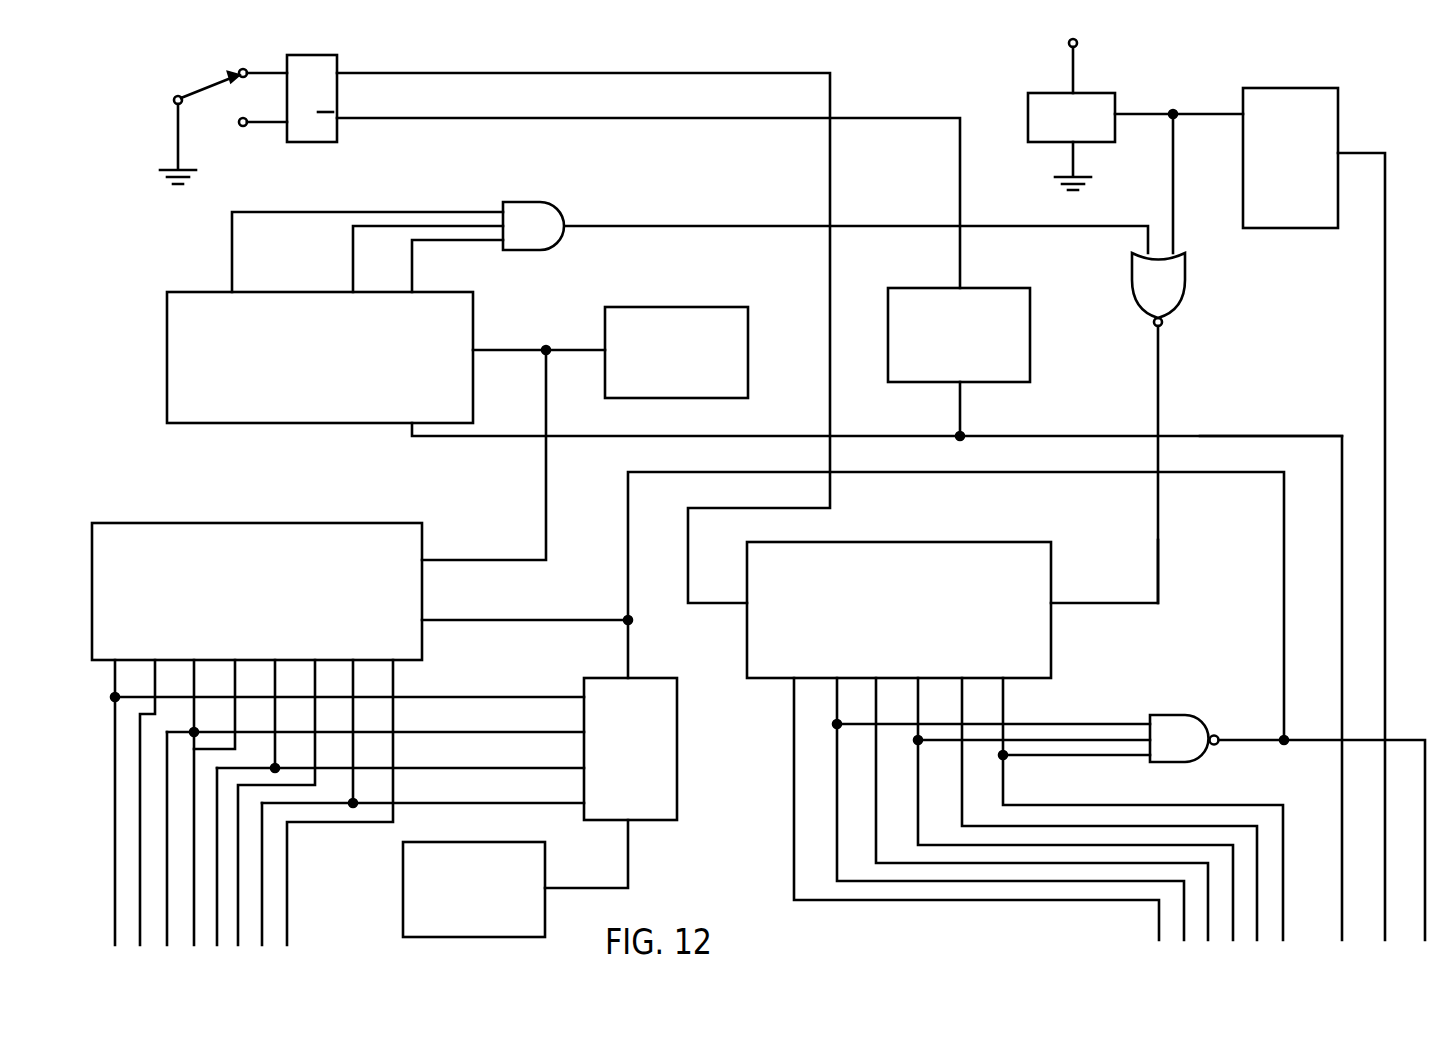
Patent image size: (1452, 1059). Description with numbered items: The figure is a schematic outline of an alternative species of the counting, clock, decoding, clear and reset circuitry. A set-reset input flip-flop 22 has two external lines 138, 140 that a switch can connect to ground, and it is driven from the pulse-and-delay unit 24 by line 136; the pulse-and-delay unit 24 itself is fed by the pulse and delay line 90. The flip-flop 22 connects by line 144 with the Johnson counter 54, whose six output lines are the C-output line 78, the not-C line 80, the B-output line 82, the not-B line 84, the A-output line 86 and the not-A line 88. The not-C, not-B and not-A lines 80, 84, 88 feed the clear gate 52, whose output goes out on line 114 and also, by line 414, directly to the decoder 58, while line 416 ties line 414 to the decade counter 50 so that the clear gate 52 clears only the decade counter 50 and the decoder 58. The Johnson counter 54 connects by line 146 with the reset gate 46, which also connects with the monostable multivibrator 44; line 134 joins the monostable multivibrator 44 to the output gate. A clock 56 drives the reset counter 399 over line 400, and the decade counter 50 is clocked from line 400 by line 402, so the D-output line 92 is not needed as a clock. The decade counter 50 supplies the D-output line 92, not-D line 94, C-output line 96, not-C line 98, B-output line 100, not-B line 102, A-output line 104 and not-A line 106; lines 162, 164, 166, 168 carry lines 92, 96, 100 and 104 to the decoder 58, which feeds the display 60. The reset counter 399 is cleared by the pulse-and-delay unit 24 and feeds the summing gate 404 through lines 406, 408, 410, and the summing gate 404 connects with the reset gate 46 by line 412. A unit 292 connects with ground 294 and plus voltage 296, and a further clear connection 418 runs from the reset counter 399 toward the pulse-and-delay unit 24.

The set-reset input flip-flop 22 is at (310, 142).
The pulse-and-delay unit 24 is at (959, 364).
The monostable multivibrator 44 is at (1226, 158).
The reset gate 46 is at (1118, 360).
The decade counter 50 is at (257, 591).
The clear gate 52 is at (1184, 738).
The Johnson counter 54 is at (899, 610).
The clock 56 is at (676, 352).
The decoder 58 is at (611, 783).
The display 60 is at (474, 889).
The C-output line of Johnson counter 78 is at (794, 724).
The not-C line of Johnson counter 80 is at (837, 768).
The B-output line of Johnson counter 82 is at (876, 803).
The not-B line of Johnson counter 84 is at (918, 840).
The A-output line of Johnson counter 86 is at (1026, 826).
The not-A line of Johnson counter 88 is at (1130, 797).
The pulse and delay line 90 is at (1235, 436).
The D-output line of decade counter 92 is at (115, 745).
The not-D line of decade counter 94 is at (140, 783).
The C-output line of decade counter 96 is at (167, 818).
The not-C line of decade counter 98 is at (194, 855).
The B-output line of decade counter 100 is at (217, 896).
The not-B line of decade counter 102 is at (238, 850).
The A-output line of decade counter 104 is at (262, 888).
The not-A line of decade counter 106 is at (287, 918).
The clear gate output line 114 is at (1440, 733).
The monostable multivibrator line 134 is at (1385, 380).
The pulse-and-delay output line 136 is at (592, 118).
The external line 138 is at (268, 126).
The external line 140 is at (262, 70).
The flip-flop output line 144 is at (463, 72).
The Johnson counter reset line 146 is at (1158, 552).
The decoder input line 162 is at (506, 697).
The decoder input line 164 is at (506, 732).
The decoder input line 166 is at (506, 768).
The decoder input line 168 is at (506, 803).
The unit 292 is at (1071, 117).
The ground 294 is at (1058, 195).
The plus voltage 296 is at (1066, 43).
The reset counter 399 is at (320, 357).
The clock line 400 is at (508, 350).
The decade counter clock line 402 is at (528, 560).
The summing gate 404 is at (533, 226).
The summing gate input line 406 is at (232, 268).
The summing gate input line 408 is at (353, 268).
The summing gate input line 410 is at (412, 266).
The summing gate output line 412 is at (742, 224).
The clear line 414 is at (680, 472).
The decade counter clear line 416 is at (546, 620).
The clear line 418 is at (615, 436).